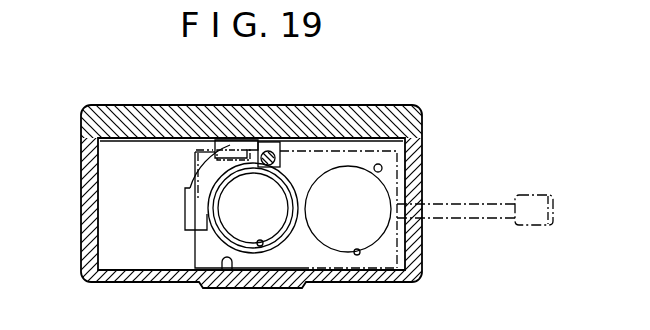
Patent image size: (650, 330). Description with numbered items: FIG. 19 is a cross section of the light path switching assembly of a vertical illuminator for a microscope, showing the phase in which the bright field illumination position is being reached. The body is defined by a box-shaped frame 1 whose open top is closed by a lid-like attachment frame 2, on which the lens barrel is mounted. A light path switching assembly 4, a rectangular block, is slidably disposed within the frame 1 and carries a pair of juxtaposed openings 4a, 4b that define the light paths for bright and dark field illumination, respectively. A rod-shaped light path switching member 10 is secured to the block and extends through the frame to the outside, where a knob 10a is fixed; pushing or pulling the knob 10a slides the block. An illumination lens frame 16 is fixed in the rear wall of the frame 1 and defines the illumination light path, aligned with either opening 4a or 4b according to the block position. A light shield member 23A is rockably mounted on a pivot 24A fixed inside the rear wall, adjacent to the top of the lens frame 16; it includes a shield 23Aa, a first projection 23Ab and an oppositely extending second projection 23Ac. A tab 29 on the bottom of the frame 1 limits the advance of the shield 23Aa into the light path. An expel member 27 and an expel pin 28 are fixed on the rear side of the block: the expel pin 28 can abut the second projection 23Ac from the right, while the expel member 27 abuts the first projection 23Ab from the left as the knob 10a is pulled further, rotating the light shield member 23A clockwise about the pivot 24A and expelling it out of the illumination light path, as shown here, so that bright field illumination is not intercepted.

The frame 1 is at (86, 176).
The attachment frame 2 is at (92, 124).
The light path switching assembly 4 is at (348, 154).
The opening 4a is at (261, 246).
The opening 4b is at (358, 255).
The light path switching member 10 is at (449, 214).
The knob 10a is at (525, 221).
The illumination lens frame 16 is at (265, 245).
The light shield member 23A is at (200, 172).
The shield 23Aa is at (191, 221).
The first projection 23Ab is at (268, 142).
The second projection 23Ac is at (266, 166).
The pivot 24A is at (271, 152).
The expel member 27 is at (222, 140).
The expel pin 28 is at (383, 165).
The tab 29 is at (227, 262).